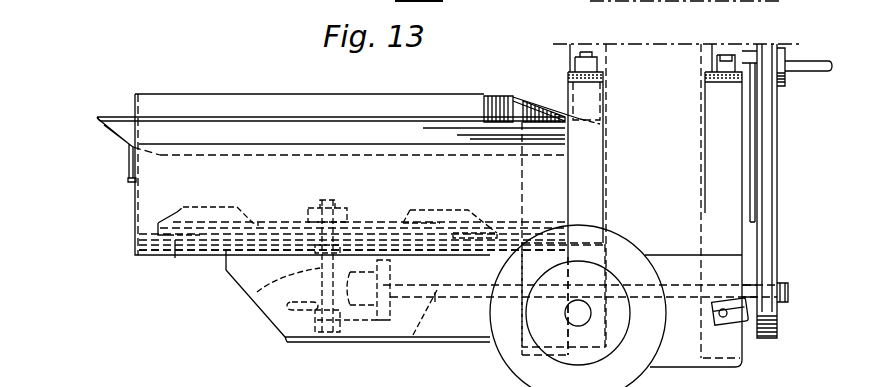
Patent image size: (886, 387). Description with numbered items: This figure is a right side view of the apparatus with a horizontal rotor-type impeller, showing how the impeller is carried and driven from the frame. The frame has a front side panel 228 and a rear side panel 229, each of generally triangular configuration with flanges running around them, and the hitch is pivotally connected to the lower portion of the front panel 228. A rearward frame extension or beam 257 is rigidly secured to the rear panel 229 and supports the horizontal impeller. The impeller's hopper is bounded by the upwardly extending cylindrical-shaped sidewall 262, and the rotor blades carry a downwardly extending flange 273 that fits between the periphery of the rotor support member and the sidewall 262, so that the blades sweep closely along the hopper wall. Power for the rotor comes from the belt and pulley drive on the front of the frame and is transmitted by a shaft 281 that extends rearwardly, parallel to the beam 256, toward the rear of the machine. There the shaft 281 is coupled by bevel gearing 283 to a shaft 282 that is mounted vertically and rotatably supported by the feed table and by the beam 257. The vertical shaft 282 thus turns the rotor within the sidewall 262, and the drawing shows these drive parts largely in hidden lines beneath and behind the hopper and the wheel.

The side panel 229 is at (568, 84).
The side panel 228 is at (742, 104).
The cylindrical-shaped sidewall 262 is at (135, 207).
The downwardly extending flange 273 is at (175, 256).
The shaft 282 is at (259, 292).
The rearward frame extension or beam 257 is at (268, 304).
The bevel gearing 283 is at (338, 346).
The beam 256 is at (360, 341).
The shaft 281 is at (413, 347).